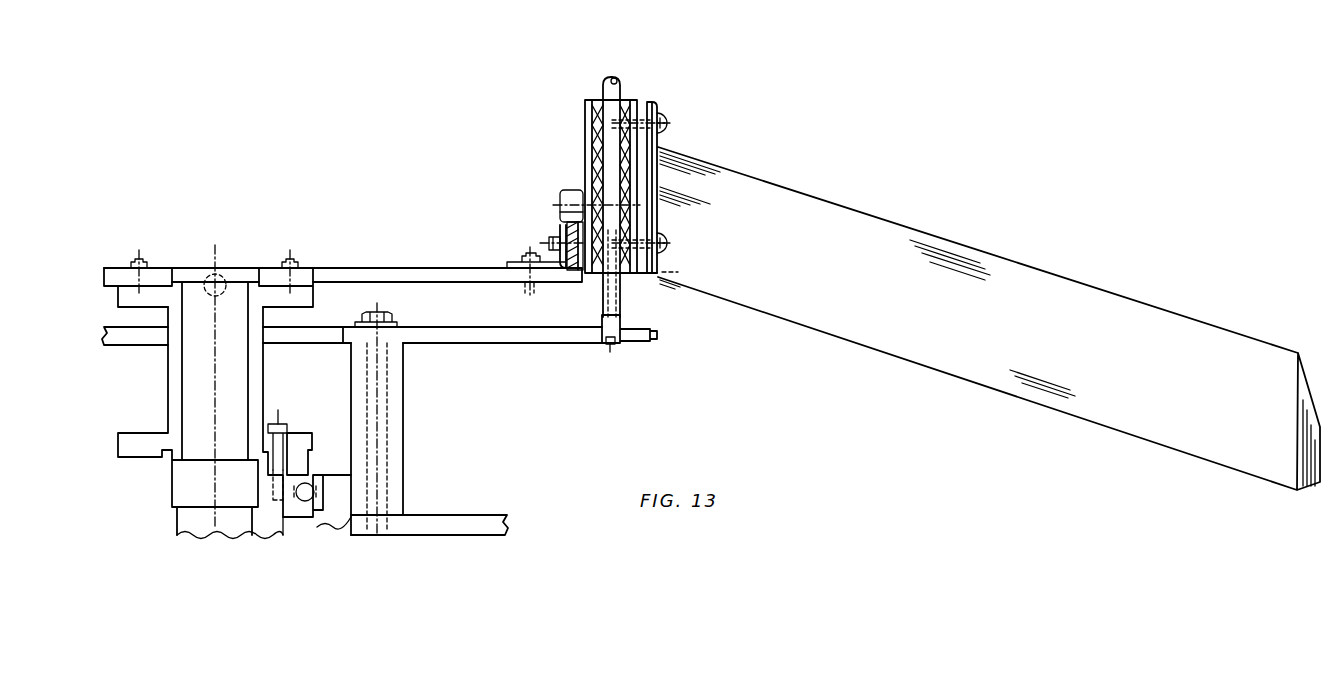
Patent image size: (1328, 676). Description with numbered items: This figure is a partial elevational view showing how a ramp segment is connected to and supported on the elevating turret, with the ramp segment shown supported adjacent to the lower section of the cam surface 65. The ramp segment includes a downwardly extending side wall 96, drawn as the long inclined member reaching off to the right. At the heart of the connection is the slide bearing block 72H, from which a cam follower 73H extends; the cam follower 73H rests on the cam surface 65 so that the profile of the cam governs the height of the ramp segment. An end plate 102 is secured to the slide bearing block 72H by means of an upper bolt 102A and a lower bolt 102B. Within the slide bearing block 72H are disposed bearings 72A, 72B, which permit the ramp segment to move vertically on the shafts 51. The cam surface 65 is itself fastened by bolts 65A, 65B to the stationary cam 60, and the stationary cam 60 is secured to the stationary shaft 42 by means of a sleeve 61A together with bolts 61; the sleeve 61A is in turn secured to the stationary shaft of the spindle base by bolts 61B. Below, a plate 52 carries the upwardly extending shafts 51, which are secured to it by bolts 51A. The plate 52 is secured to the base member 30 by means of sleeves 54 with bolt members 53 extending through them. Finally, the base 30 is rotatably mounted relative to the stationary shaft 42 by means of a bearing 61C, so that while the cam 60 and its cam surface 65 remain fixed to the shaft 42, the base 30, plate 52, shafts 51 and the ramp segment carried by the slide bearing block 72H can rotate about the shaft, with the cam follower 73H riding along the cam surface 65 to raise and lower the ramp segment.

The base member 30 is at (435, 517).
The stationary shaft 42 is at (233, 285).
The shafts 51 is at (657, 335).
The bolts 51A is at (614, 348).
The plate 52 is at (540, 335).
The bolt members 53 is at (395, 322).
The sleeves 54 is at (400, 426).
The stationary cam 60 is at (372, 268).
The bolts 61 is at (140, 266).
The sleeve 61A is at (268, 392).
The bolts 61B is at (287, 429).
The bearing 61C is at (305, 502).
The cam surface 65 is at (566, 224).
The bolt 65A is at (550, 243).
The bolt 65B is at (522, 260).
The bearing 72A is at (612, 105).
The bearing 72B is at (622, 305).
The slide bearing block 72H is at (586, 103).
The cam follower 73H is at (578, 192).
The side wall 96 is at (918, 252).
The end plate 102 is at (658, 105).
The bolt 102A is at (664, 131).
The bolt 102B is at (664, 250).